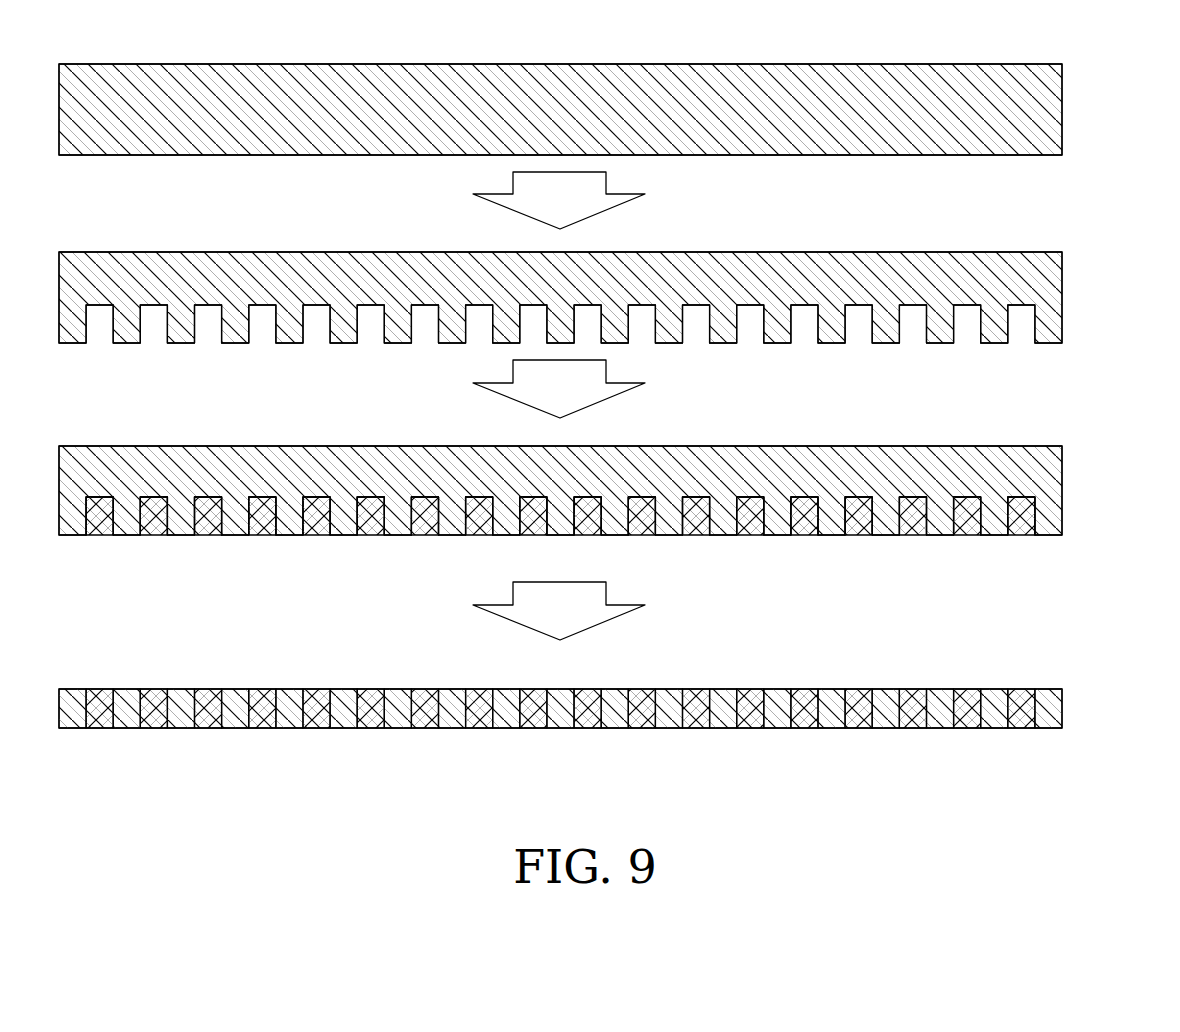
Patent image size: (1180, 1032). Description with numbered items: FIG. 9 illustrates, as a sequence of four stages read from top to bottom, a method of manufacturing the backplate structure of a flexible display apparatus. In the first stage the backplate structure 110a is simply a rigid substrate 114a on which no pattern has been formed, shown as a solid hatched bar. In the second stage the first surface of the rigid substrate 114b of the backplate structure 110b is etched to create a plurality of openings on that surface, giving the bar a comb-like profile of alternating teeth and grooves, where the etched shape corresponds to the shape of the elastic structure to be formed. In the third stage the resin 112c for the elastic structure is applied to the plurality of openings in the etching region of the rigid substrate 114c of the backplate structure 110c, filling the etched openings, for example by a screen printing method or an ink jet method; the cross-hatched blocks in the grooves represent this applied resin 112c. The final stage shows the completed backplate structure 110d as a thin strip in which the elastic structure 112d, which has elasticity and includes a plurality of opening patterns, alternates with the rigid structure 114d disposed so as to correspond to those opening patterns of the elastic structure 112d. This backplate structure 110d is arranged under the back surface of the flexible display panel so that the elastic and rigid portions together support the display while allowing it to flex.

The backplate structure in the first manufacturing step 110a is at (1062, 103).
The rigid substrate 114a is at (1047, 140).
The backplate structure in the second manufacturing step 110b is at (1062, 292).
The rigid substrate 114b is at (1047, 328).
The backplate structure in the third step 110c is at (1062, 484).
The resin for elastic structure 112c is at (803, 520).
The rigid substrate 114c is at (1047, 520).
The backplate structure 110d is at (1062, 708).
The elastic structure 112d is at (805, 713).
The rigid structure 114d is at (1047, 713).